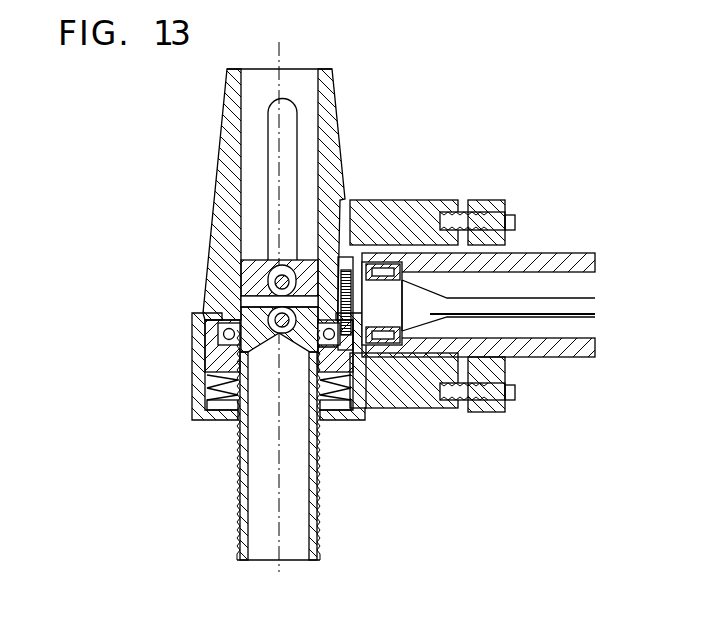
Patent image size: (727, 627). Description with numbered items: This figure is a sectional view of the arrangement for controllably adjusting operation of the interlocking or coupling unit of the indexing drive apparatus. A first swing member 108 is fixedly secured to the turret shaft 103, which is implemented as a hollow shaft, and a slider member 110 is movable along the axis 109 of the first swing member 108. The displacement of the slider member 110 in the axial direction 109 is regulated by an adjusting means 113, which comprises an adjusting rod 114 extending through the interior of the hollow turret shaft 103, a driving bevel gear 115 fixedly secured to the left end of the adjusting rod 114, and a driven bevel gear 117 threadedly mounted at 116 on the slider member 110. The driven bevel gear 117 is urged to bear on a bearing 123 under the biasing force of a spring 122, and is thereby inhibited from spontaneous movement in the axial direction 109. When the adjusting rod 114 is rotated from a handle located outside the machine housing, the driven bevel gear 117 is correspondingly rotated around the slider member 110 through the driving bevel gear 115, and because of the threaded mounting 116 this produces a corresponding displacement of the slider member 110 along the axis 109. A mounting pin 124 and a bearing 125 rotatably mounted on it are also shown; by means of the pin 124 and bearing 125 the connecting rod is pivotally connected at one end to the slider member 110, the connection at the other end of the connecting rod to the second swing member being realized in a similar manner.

The turret shaft 103 is at (559, 262).
The first swing member 108 is at (327, 103).
The axis 109 is at (279, 62).
The slider member 110 is at (317, 507).
The adjusting means 113 is at (586, 318).
The adjusting rod 114 is at (585, 303).
The driving bevel gear 115 is at (343, 256).
The threaded mounting 116 is at (240, 358).
The driven bevel gear 117 is at (374, 408).
The spring 122 is at (210, 387).
The bearing 123 is at (230, 318).
The mounting pin 124 is at (266, 298).
The bearing 125 is at (245, 290).